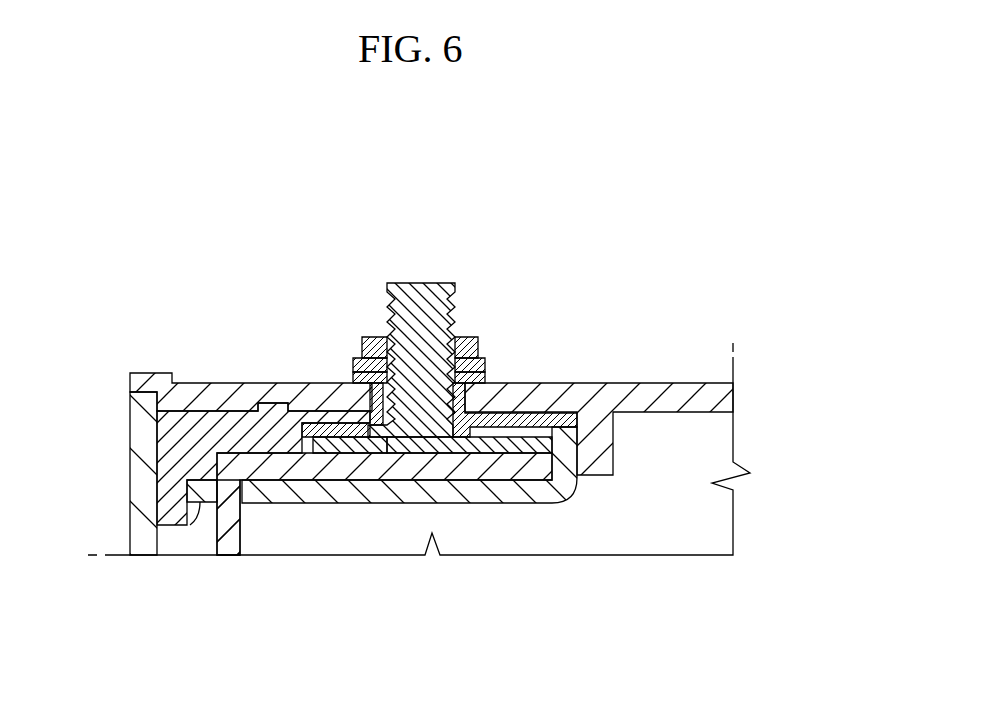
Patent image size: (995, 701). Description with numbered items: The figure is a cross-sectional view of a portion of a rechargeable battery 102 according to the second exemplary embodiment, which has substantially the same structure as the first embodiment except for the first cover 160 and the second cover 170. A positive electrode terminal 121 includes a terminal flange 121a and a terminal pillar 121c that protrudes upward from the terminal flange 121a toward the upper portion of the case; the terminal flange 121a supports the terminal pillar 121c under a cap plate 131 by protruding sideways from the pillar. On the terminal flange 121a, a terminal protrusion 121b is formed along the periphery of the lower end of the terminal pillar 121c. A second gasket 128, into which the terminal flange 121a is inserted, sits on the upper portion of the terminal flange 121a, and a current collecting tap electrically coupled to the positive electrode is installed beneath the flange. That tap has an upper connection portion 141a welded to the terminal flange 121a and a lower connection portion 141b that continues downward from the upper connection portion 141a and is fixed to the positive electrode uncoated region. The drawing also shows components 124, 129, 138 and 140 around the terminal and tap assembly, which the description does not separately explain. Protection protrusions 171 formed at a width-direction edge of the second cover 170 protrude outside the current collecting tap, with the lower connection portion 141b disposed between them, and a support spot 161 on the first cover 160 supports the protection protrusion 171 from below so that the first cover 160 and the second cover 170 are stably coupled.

The rechargeable battery 102 is at (268, 196).
The positive electrode terminal 121 is at (422, 420).
The terminal flange 121a is at (343, 447).
The terminal protrusion 121b is at (463, 455).
The terminal pillar 121c is at (406, 318).
The washer 124 is at (473, 367).
The second gasket 128 is at (310, 432).
The nut 129 is at (467, 345).
The cap plate 131 is at (633, 398).
The seal member 138 is at (477, 378).
The bus bar assembly 140 is at (342, 478).
The upper connection portion 141a is at (287, 467).
The lower connection portion 141b is at (227, 538).
The first cover 160 is at (177, 448).
The support spot 161 is at (197, 525).
The second cover 170 is at (394, 492).
The protection protrusion 171 is at (192, 492).